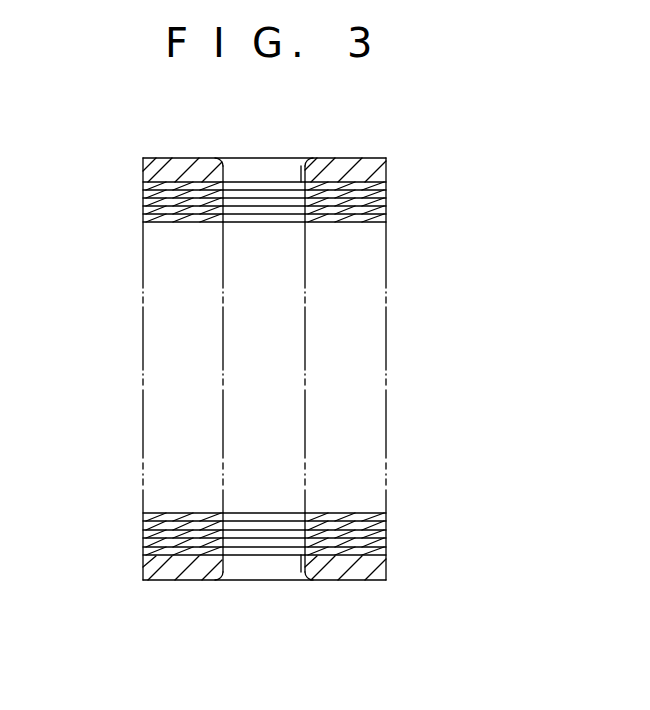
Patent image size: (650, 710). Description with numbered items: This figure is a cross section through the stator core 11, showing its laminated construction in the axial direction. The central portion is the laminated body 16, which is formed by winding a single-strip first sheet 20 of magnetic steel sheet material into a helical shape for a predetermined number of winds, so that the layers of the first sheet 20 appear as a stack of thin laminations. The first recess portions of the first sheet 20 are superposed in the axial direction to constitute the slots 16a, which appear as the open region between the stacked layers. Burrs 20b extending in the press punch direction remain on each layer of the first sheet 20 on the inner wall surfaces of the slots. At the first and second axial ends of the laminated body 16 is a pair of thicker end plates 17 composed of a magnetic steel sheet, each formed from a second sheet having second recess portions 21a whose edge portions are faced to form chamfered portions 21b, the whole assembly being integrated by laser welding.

The stator core 11 is at (75, 133).
The laminated body 16 is at (397, 187).
The slot 16a is at (233, 359).
The end plate 17 is at (388, 167).
The first sheet 20 is at (143, 219).
The burr 20b is at (232, 224).
The second recess portion 21a is at (253, 168).
The chamfered portion 21b is at (305, 160).